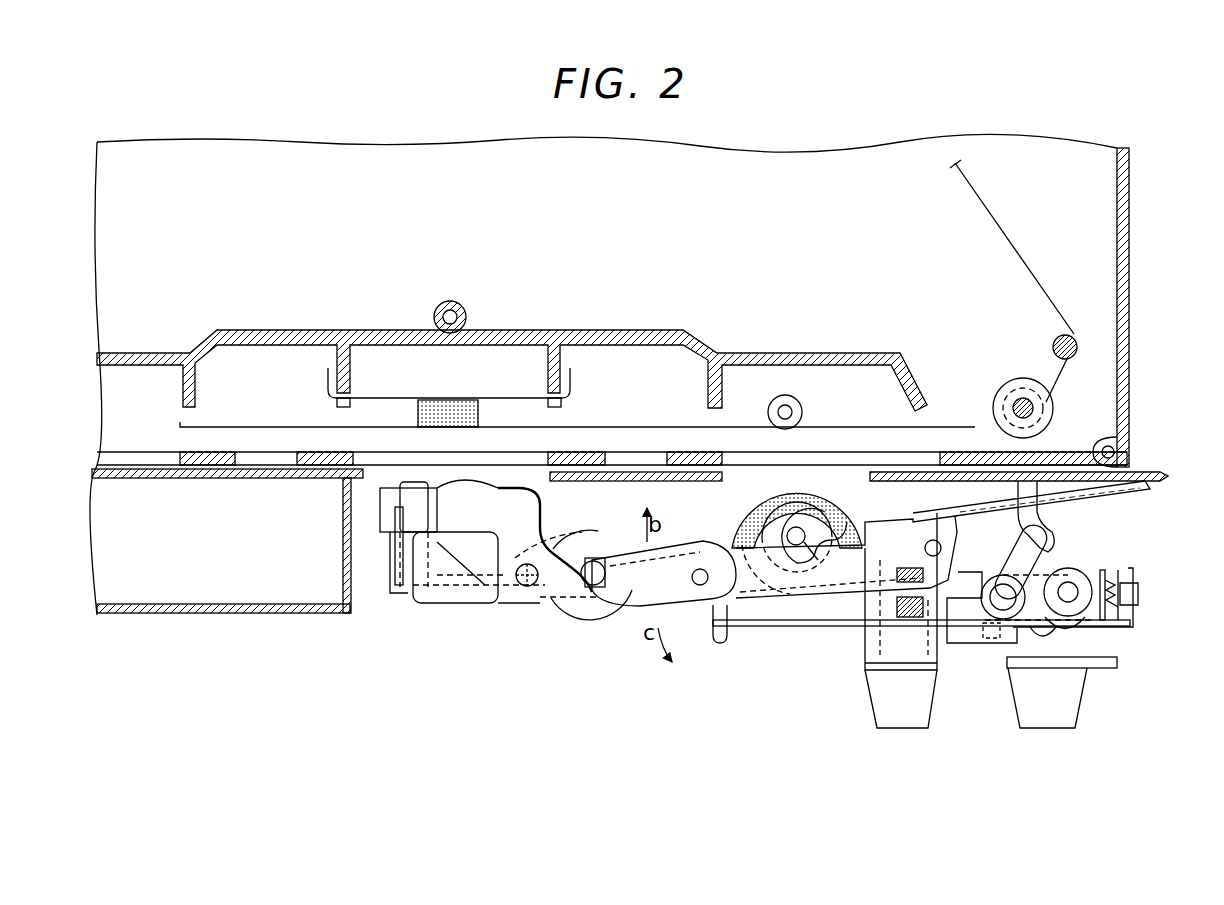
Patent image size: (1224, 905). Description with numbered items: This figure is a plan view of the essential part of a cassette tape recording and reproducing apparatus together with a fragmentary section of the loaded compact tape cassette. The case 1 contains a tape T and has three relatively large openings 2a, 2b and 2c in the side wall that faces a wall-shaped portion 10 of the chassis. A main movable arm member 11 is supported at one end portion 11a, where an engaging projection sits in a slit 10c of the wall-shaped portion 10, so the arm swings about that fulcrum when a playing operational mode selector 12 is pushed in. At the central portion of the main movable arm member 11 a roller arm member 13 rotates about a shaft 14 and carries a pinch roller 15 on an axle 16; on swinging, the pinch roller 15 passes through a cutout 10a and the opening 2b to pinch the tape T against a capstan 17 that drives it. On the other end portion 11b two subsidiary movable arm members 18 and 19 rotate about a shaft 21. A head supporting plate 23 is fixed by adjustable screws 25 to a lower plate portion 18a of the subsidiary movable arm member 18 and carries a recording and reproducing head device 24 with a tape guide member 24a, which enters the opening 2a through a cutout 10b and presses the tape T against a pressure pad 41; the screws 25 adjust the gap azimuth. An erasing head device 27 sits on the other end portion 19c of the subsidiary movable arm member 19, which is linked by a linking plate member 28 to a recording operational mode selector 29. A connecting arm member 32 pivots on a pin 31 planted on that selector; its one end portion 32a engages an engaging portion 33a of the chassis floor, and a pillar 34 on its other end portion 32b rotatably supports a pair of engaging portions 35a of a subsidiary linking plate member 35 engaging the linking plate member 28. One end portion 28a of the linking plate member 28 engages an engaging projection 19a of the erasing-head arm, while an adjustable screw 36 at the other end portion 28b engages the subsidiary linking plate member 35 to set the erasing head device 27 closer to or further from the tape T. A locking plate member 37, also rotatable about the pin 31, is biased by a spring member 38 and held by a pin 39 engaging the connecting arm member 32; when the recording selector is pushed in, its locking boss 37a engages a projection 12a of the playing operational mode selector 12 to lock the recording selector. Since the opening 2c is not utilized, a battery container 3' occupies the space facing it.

The case 1 is at (1131, 308).
The opening 2a is at (418, 463).
The opening 2b is at (840, 463).
The opening 2c is at (130, 463).
The battery container 3' is at (227, 567).
The wall-shaped portion of the chassis 10 is at (953, 470).
The cutout 10a is at (725, 481).
The cutout 10b is at (545, 481).
The slit 10c is at (1150, 478).
The main movable arm member 11 is at (700, 612).
The one end portion of the main movable arm member 11a is at (1150, 491).
The other end portion of the main movable arm member 11b is at (640, 612).
The playing operational mode selector 12 is at (875, 648).
The projection 12a is at (982, 550).
The roller arm member 13 is at (832, 520).
The shaft 14 is at (925, 549).
The pinch roller 15 is at (762, 480).
The axle 16 is at (818, 560).
The capstan 17 is at (768, 412).
The subsidiary movable arm member 18 is at (577, 628).
The lower plate portion 18a is at (598, 560).
The subsidiary movable arm member 19 is at (463, 606).
The engaging projection 19a is at (716, 645).
The other end portion of the subsidiary movable arm member 19c is at (392, 586).
The shaft 21 is at (692, 577).
The head supporting plate 23 is at (555, 545).
The recording and reproducing head device 24 is at (465, 487).
The tape guide member 24a is at (528, 490).
The adjustable screws 25 is at (575, 592).
The erasing head device 27 is at (407, 482).
The linking plate member 28 is at (778, 628).
The one end portion of the linking plate member 28a is at (740, 630).
The other end portion of the linking plate member 28b is at (1137, 575).
The recording operational mode selector 29 is at (1115, 645).
The pin 31 is at (992, 606).
The connecting arm member 32 is at (1040, 565).
The one end portion of the connecting arm member 32a is at (925, 600).
The other end portion of the connecting arm member 32b is at (1105, 650).
The engaging portion 33a is at (910, 612).
The pillar 34 is at (1072, 590).
The subsidiary linking plate member 35 is at (1087, 628).
The engaging portions 35a is at (1118, 555).
The adjustable screw 36 is at (1140, 590).
The locking plate member 37 is at (1018, 500).
The locking boss 37a is at (1040, 545).
The spring member 38 is at (1035, 632).
The pin 39 is at (1052, 632).
The pressure pad 41 is at (418, 413).
The tape T is at (623, 426).